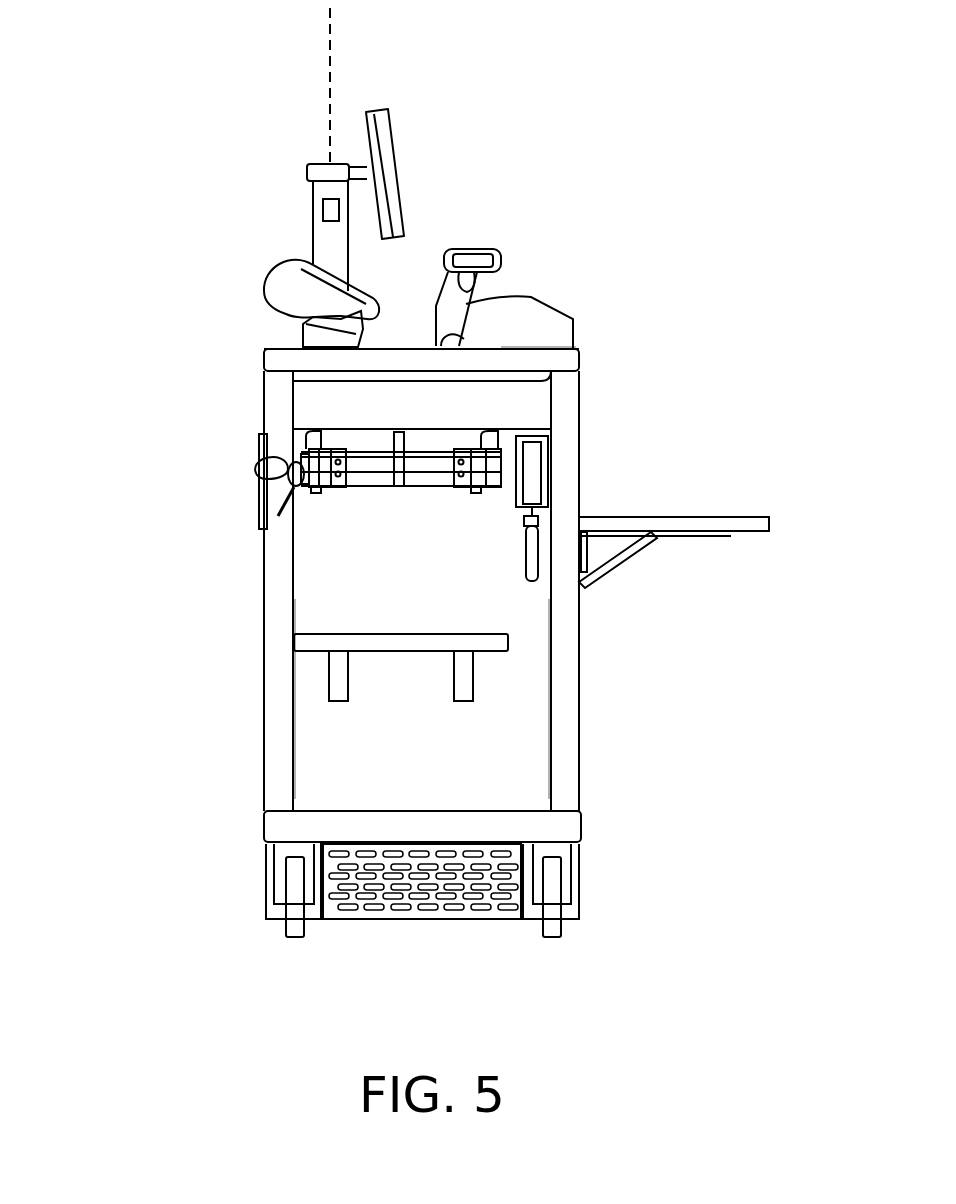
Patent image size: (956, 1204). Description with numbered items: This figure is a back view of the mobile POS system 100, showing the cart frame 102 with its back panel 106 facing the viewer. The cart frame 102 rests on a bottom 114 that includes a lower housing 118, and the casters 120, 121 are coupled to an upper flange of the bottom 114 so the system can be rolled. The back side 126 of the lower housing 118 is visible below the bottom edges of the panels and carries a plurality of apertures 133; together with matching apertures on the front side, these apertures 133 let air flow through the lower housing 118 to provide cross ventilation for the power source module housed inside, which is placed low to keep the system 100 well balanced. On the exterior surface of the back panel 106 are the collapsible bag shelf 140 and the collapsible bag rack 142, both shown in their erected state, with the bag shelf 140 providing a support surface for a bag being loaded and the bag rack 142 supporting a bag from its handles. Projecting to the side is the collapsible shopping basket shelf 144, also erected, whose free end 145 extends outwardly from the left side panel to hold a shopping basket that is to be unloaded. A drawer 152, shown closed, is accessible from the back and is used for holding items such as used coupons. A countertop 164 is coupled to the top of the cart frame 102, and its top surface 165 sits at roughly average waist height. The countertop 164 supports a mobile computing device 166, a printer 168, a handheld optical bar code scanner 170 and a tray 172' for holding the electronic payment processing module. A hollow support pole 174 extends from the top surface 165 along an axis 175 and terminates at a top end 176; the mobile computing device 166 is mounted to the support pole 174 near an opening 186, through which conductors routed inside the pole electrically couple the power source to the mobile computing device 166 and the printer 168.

The mobile POS system 100 is at (140, 172).
The cart frame 102 is at (259, 391).
The back panel 106 is at (490, 602).
The bottom 114 is at (450, 927).
The lower housing 118 is at (520, 908).
The caster 120 is at (551, 940).
The caster 121 is at (294, 940).
The back side 126 is at (386, 917).
The apertures 133 is at (346, 870).
The collapsible bag shelf 140 is at (345, 632).
The collapsible bag rack 142 is at (447, 438).
The collapsible shopping basket shelf 144 is at (772, 540).
The free end 145 is at (768, 525).
The drawer 152 is at (317, 418).
The countertop 164 is at (545, 352).
The top surface 165 is at (512, 347).
The mobile computing device 166 is at (398, 185).
The printer 168 is at (360, 300).
The handheld optical bar code scanner 170 is at (488, 250).
The tray 172' is at (550, 275).
The support pole 174 is at (324, 240).
The axis 175 is at (329, 52).
The top end 176 is at (322, 165).
The opening 186 is at (322, 210).